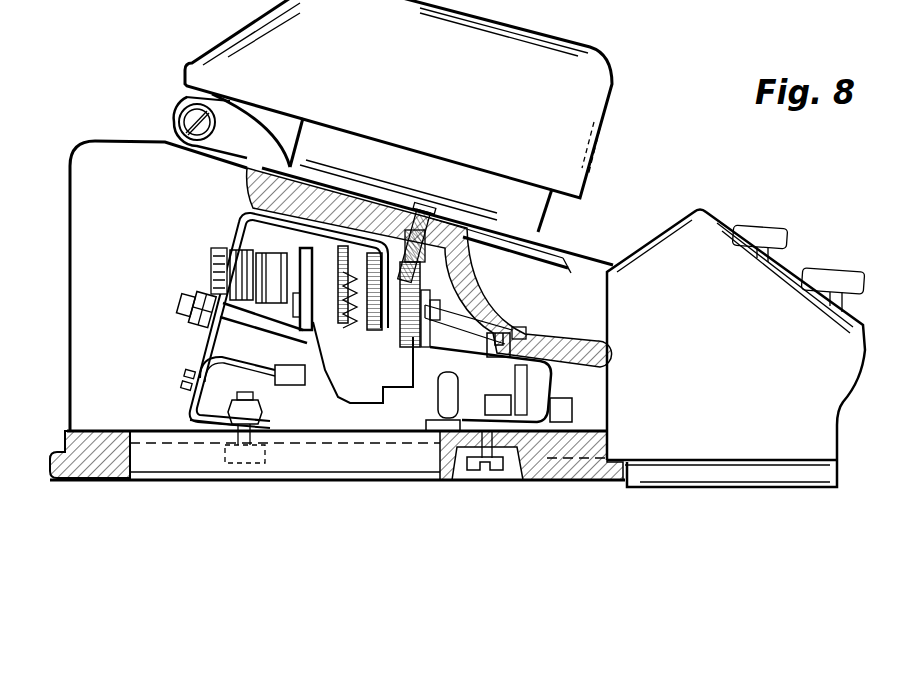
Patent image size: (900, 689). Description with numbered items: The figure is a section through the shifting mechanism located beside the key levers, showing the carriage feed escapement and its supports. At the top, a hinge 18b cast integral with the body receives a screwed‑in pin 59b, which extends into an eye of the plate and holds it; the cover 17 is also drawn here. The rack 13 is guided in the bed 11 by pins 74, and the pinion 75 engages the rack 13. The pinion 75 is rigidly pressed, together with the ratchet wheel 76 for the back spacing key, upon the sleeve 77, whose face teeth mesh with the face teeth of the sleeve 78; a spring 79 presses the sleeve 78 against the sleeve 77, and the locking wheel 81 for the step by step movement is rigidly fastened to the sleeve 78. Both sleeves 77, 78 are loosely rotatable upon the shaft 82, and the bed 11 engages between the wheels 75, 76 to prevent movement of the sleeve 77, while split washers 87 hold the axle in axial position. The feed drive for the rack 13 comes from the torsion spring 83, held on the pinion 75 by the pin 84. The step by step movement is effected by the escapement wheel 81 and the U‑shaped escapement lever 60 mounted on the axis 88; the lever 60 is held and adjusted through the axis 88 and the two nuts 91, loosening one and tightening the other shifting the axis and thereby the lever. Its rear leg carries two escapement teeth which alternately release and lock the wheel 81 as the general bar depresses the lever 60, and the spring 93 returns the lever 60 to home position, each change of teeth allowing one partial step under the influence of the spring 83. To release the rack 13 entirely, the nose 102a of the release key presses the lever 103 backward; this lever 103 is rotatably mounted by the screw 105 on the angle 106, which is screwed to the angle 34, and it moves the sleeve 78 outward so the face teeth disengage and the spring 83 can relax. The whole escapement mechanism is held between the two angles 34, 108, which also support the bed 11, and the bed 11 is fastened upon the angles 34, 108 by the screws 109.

The cover 17 is at (592, 71).
The hinge 18b is at (182, 102).
The pin 59b is at (190, 118).
The bed 11 is at (263, 188).
The pins 74 is at (462, 236).
The pinion 75 is at (538, 239).
The rack 13 is at (433, 222).
The pin 84 is at (470, 290).
The torsion spring 83 is at (490, 320).
The angle 34 is at (203, 350).
The spring 79 is at (260, 230).
The angle 106 is at (193, 390).
The axis 88 is at (183, 305).
The nuts 91 is at (192, 308).
The shaft 82 is at (215, 265).
The split washers 87 is at (233, 240).
The ratchet wheel 76 is at (357, 322).
The sleeve 78 is at (322, 265).
The locking wheel 81 is at (352, 240).
The sleeve 77 is at (385, 320).
The escapement lever 60 is at (410, 380).
The nose 102a is at (289, 385).
The screw 105 is at (240, 368).
The lever 103 is at (247, 405).
The spring 93 is at (440, 425).
The angle 108 is at (540, 420).
The screws 109 is at (550, 333).